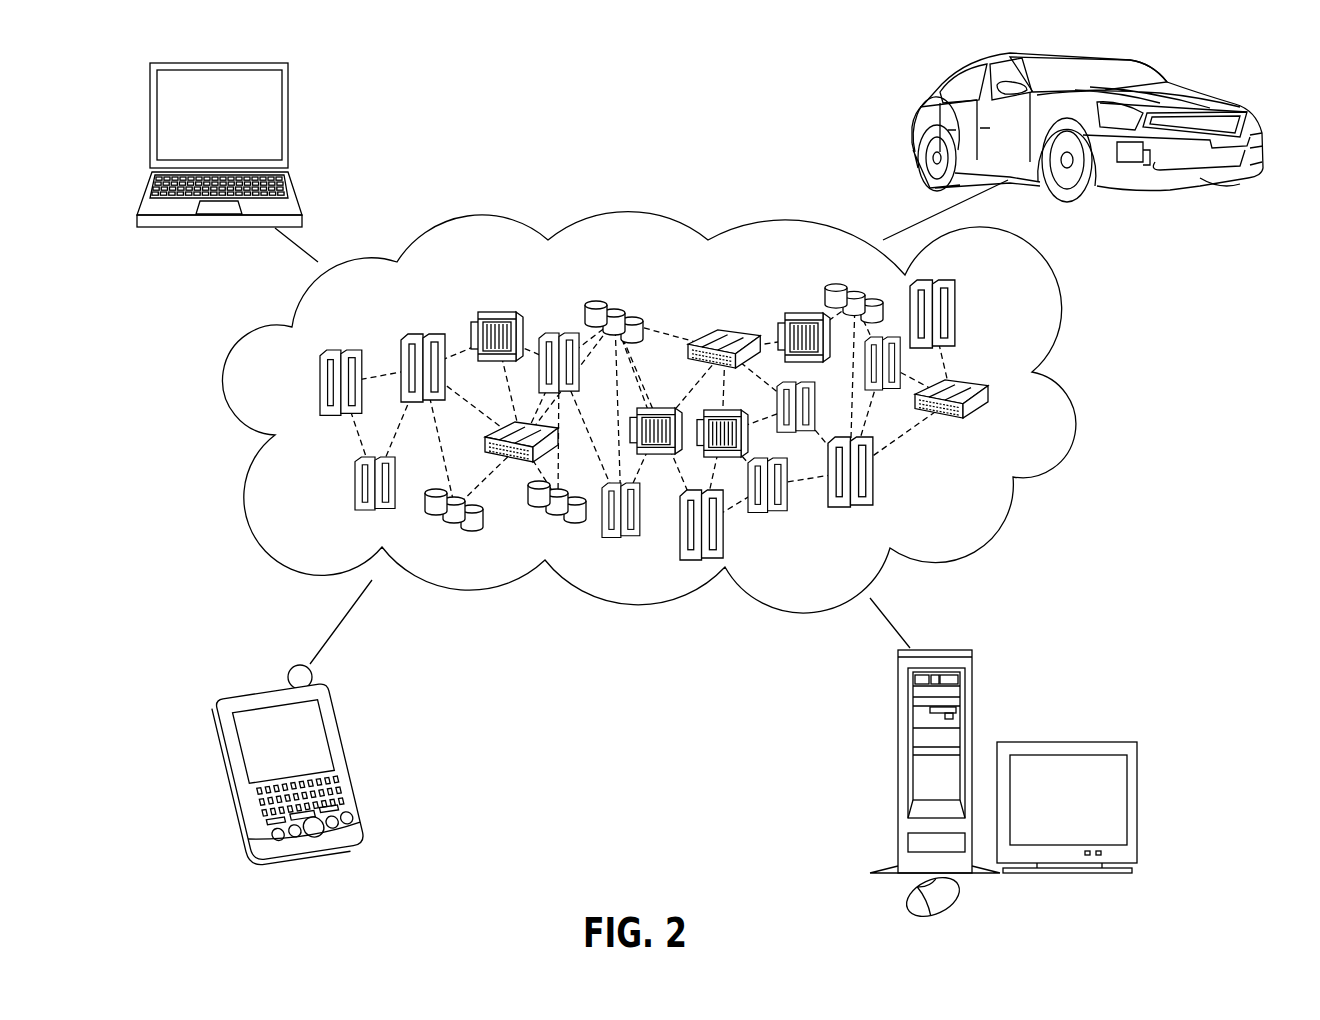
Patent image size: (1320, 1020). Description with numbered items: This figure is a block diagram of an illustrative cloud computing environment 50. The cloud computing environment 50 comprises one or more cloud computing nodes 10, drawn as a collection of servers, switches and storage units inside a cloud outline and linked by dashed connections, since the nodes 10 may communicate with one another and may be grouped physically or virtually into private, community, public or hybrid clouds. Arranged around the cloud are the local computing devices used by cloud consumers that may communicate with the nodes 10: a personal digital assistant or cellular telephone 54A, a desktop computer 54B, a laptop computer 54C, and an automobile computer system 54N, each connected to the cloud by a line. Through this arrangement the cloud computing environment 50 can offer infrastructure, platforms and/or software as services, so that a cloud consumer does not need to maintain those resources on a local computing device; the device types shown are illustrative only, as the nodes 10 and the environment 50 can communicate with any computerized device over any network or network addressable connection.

The cloud computing node 10 is at (978, 505).
The cloud computing environment 50 is at (1063, 400).
The personal digital assistant or cellular telephone 54A is at (343, 722).
The desktop computer 54B is at (898, 708).
The laptop computer 54C is at (289, 100).
The automobile computer system 54N is at (919, 121).